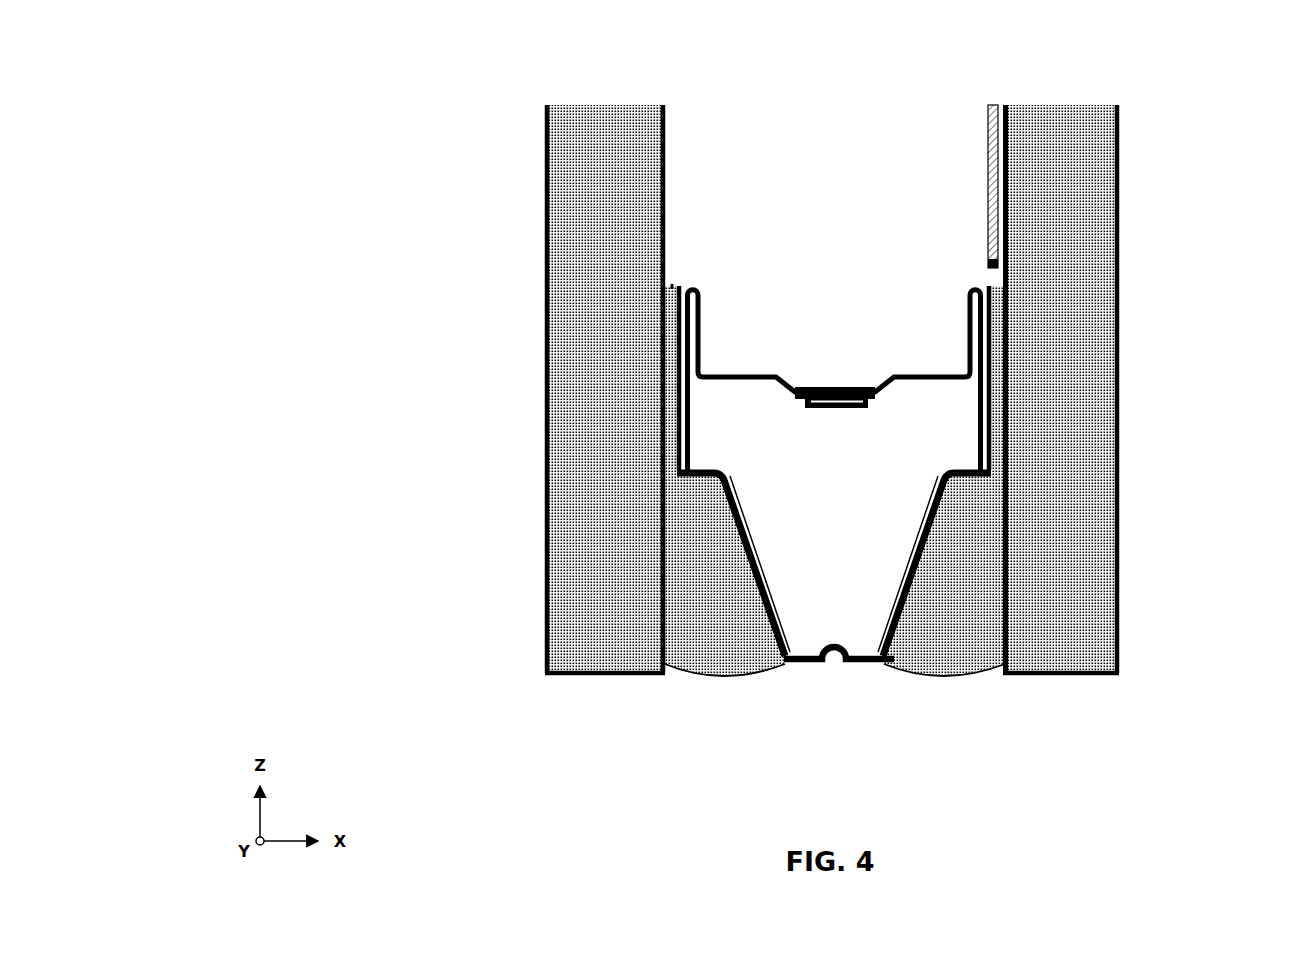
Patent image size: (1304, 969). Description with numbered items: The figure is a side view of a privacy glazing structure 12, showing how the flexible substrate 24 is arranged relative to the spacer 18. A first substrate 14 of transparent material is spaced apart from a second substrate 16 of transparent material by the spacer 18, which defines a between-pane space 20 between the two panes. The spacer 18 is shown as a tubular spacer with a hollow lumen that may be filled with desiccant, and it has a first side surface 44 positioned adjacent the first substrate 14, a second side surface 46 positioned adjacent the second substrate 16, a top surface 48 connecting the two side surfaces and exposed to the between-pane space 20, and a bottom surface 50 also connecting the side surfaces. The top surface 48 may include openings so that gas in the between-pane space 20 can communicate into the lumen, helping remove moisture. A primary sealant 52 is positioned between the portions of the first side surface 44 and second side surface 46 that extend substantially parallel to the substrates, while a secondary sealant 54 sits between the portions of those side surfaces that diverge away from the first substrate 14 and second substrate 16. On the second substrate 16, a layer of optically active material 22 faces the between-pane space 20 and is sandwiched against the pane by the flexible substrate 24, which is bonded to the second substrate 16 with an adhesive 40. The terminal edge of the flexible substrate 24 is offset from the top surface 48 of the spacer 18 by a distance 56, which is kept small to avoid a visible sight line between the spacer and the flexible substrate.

The privacy glazing structure 12 is at (1257, 108).
The first substrate of transparent material 14 is at (585, 175).
The second substrate of transparent material 16 is at (1037, 175).
The spacer 18 is at (812, 500).
The between-pane space 20 is at (975, 149).
The layer of optically active material 22 is at (995, 97).
The flexible substrate 24 is at (984, 97).
The adhesive 40 is at (985, 256).
The first side surface 44 is at (742, 582).
The second side surface 46 is at (982, 407).
The top surface 48 is at (738, 368).
The bottom surface 50 is at (824, 653).
The primary sealant 52 is at (665, 268).
The secondary sealant 54 is at (698, 660).
The distance 56 is at (992, 261).